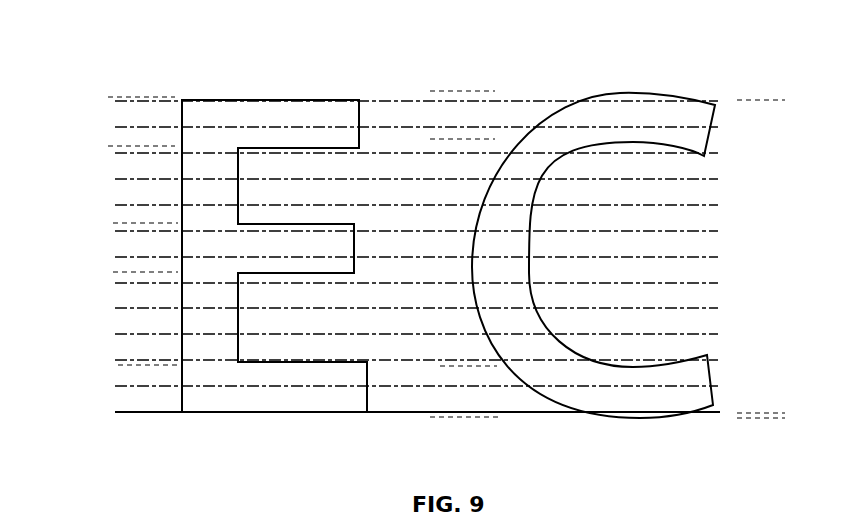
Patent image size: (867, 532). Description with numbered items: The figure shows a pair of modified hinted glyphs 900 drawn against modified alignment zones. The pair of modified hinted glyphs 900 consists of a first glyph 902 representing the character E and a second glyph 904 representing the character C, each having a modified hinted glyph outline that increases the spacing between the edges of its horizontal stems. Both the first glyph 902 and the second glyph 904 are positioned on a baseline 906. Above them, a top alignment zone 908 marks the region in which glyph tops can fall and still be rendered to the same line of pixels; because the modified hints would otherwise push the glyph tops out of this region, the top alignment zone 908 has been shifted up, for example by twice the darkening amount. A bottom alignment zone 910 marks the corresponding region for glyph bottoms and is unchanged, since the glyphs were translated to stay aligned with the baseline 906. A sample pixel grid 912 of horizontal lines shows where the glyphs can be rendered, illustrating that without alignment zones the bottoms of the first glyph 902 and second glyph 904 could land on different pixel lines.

The pair of modified hinted glyphs 900 is at (94, 40).
The first glyph 902 is at (290, 89).
The second glyph 904 is at (620, 83).
The baseline 906 is at (143, 416).
The top alignment zone 908 is at (700, 44).
The bottom alignment zone 910 is at (758, 426).
The sample pixel grid 912 is at (736, 206).